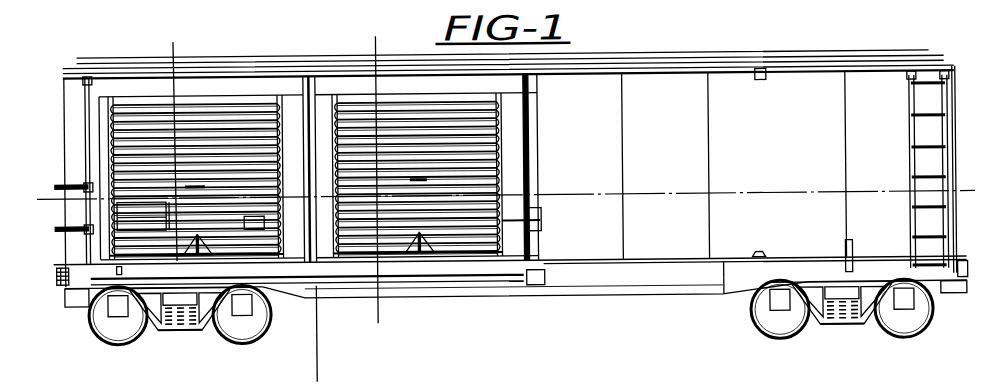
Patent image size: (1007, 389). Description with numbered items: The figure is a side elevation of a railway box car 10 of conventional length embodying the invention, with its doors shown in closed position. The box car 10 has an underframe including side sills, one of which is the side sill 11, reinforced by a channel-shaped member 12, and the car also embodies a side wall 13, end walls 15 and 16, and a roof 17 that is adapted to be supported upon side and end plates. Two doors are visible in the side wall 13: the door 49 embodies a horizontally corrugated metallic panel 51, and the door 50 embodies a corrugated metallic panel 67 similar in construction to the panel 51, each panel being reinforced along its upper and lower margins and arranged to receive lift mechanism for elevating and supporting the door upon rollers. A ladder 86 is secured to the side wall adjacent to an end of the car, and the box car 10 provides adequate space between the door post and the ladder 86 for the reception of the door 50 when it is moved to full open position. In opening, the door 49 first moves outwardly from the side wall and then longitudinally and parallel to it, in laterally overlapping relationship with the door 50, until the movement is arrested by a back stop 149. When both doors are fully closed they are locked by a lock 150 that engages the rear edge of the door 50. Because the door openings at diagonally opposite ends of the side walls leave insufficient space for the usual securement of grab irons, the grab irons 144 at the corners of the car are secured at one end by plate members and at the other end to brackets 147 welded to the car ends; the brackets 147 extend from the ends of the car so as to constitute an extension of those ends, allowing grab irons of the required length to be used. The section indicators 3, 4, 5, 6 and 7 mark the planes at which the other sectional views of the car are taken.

The section line 3- 3 is at (43, 191).
The section line 4- 4 is at (43, 257).
The section line 5-5 / roof edge bracket 5 is at (72, 68).
The section line 6- 6 is at (170, 44).
The section line 7- 7 is at (372, 42).
The railway box car 10 is at (685, 165).
The side sill 11 is at (864, 262).
The channel-shaped member 12 is at (496, 287).
The side wall 13 is at (683, 242).
The end wall 15 is at (64, 128).
The end wall 16 is at (956, 134).
The roof 17 is at (644, 54).
The door 49 is at (209, 117).
The door 50 is at (494, 160).
The horizontally corrugated metallic panel 51 is at (318, 142).
The corrugated metallic panel 67 is at (447, 175).
The ladder 86 is at (909, 134).
The grab irons 144 is at (73, 179).
The brackets 147 is at (62, 181).
The back stop 149 is at (758, 256).
The lock 150 is at (538, 220).